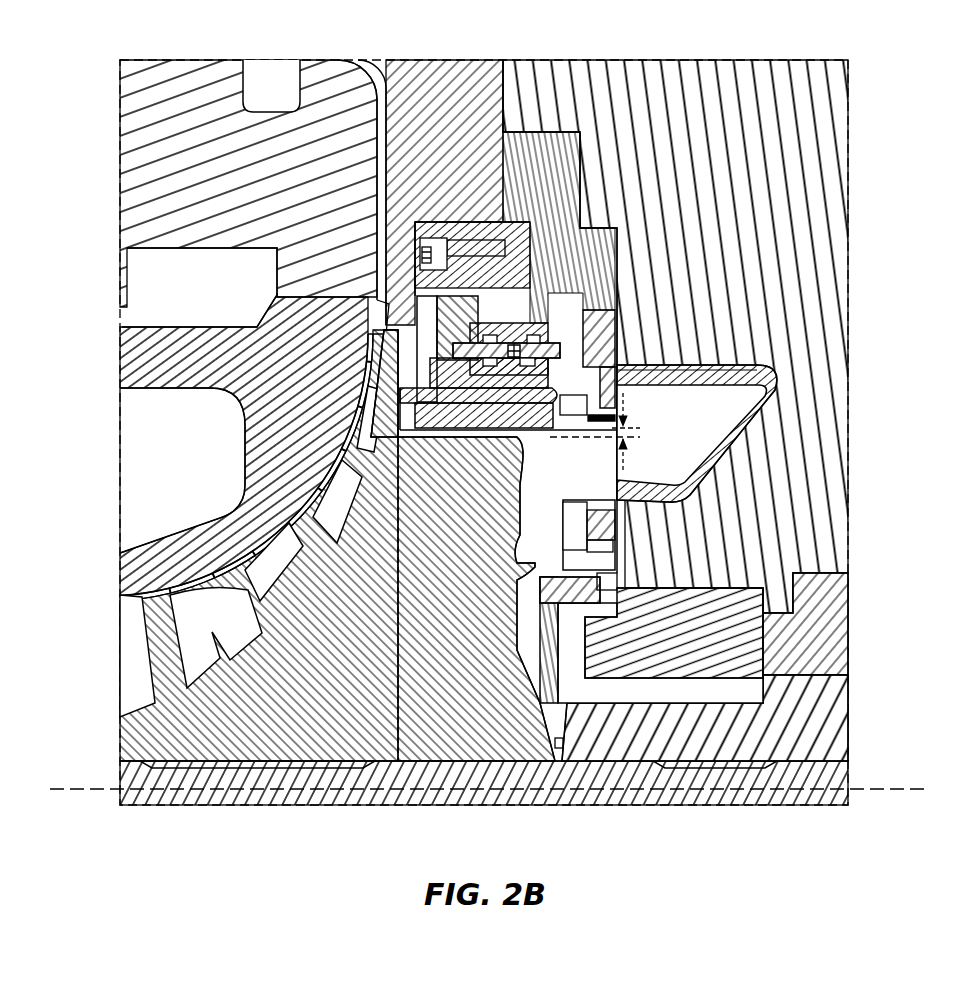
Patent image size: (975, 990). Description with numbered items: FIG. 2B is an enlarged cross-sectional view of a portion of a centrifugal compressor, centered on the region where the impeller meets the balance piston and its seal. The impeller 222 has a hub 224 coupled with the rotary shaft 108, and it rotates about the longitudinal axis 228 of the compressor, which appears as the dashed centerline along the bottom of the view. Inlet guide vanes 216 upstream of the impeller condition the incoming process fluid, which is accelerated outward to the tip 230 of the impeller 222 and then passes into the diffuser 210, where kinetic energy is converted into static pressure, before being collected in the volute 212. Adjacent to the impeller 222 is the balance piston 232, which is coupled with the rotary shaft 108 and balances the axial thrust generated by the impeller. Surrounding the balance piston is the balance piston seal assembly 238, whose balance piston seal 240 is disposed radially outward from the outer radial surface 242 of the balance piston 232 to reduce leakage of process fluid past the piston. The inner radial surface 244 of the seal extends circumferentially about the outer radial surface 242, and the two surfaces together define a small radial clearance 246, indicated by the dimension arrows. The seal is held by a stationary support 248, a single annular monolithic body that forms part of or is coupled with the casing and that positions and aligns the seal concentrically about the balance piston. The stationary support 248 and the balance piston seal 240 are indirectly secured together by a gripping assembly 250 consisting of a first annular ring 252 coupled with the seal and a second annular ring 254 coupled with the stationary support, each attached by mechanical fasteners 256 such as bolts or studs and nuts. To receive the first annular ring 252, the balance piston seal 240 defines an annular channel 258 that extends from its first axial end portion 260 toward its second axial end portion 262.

The rotary shaft 108 is at (560, 720).
The diffuser 210 is at (375, 167).
The volute 212 is at (275, 80).
The inlet guide vanes 216 is at (158, 633).
The impeller 222 is at (259, 545).
The hub 224 is at (228, 748).
The longitudinal axis 228 is at (68, 800).
The tip 230 is at (379, 298).
The balance piston 232 is at (476, 545).
The balance piston seal assembly 238 is at (457, 219).
The balance piston seal 240 is at (435, 303).
The outer radial surface 242 is at (441, 434).
The inner radial surface 244 is at (537, 437).
The radial clearance 246 is at (632, 400).
The stationary support 248 is at (568, 148).
The gripping assembly 250 is at (512, 388).
The first annular ring 252 is at (472, 360).
The second annular ring 254 is at (550, 340).
The mechanical fasteners 256 is at (517, 357).
The annular channel 258 is at (507, 303).
The first axial end portion 260 is at (505, 300).
The second axial end portion 262 is at (387, 325).